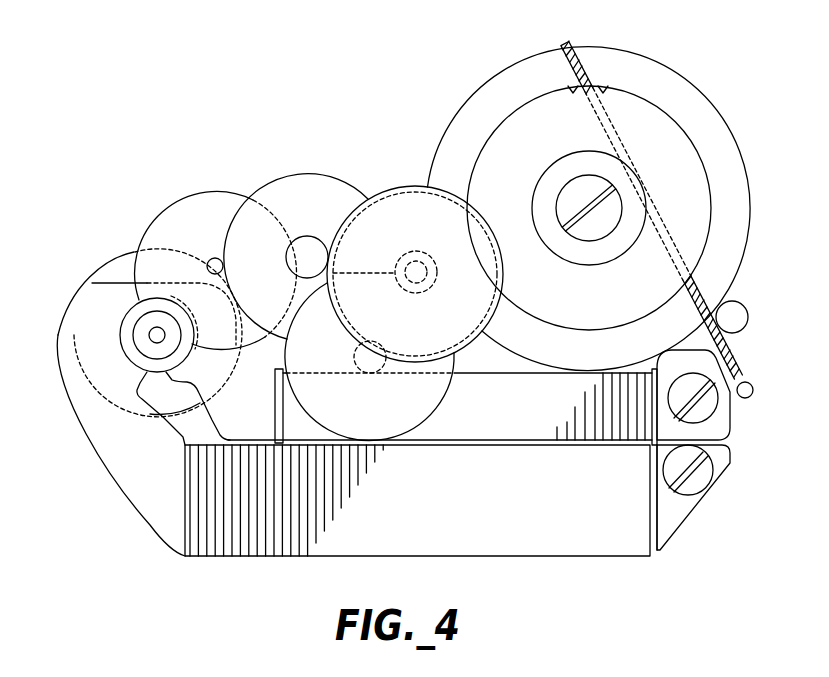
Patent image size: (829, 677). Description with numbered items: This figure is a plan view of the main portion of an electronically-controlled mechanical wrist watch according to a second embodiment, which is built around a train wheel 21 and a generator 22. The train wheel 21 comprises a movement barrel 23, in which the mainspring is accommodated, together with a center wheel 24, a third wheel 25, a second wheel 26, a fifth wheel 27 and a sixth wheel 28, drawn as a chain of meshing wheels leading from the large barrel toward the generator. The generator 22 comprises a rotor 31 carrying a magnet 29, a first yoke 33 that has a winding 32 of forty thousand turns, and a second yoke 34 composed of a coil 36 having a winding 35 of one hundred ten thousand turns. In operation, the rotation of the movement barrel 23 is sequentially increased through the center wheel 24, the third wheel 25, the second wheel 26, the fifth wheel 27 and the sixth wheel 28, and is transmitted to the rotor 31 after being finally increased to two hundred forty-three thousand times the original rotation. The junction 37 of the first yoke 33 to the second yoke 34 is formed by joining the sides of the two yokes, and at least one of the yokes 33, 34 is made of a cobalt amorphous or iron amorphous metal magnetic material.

The train wheel 21 is at (272, 180).
The generator 22 is at (58, 328).
The movement barrel 23 is at (683, 93).
The center wheel 24 is at (410, 185).
The third wheel 25 is at (427, 425).
The second wheel 26 is at (380, 190).
The fifth wheel 27 is at (303, 172).
The sixth wheel 28 is at (212, 183).
The magnet 29 is at (140, 328).
The rotor 31 is at (131, 258).
The winding 32 is at (623, 427).
The first yoke 33 is at (590, 433).
The second yoke 34 is at (167, 523).
The winding 35 is at (298, 540).
The coil 36 is at (225, 553).
The junction 37 is at (708, 437).